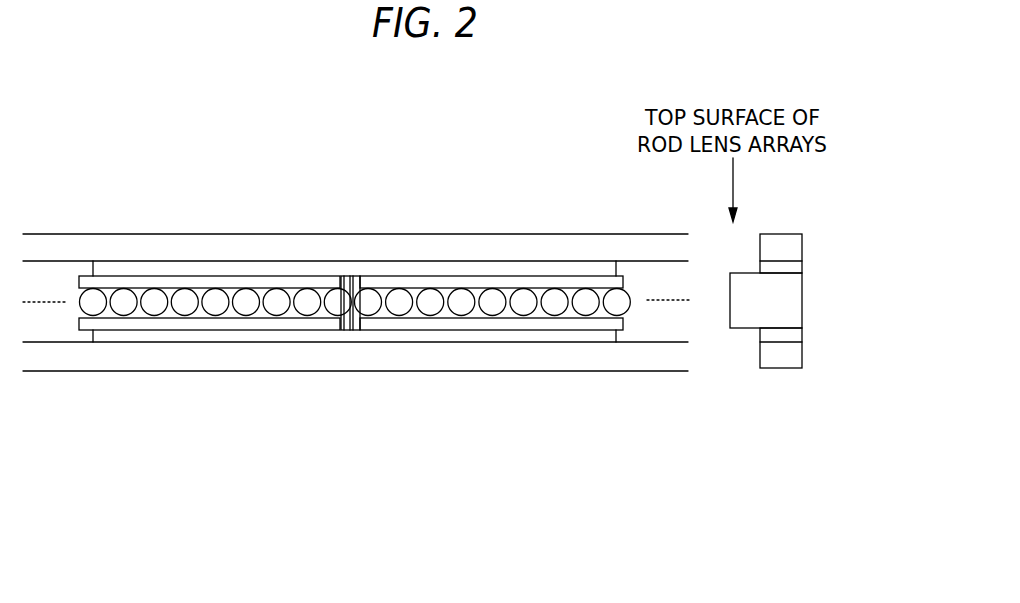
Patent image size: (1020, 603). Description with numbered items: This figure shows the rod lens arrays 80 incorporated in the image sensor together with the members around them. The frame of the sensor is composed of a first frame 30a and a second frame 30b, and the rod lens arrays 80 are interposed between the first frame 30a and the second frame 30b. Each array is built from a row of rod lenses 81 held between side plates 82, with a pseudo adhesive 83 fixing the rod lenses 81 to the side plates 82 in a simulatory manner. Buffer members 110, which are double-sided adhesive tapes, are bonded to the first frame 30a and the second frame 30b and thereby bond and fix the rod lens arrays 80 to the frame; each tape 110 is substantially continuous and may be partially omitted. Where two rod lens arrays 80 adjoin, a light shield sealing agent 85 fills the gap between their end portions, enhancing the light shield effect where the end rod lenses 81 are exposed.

The first frame 30a is at (102, 245).
The second frame 30b is at (100, 355).
The rod lens arrays 80 is at (663, 313).
The rod lenses 81 is at (216, 290).
The side plates 82 is at (460, 277).
The adhesive 83 is at (386, 314).
The light shield sealing agent 85 is at (346, 275).
The buffer members 110 is at (548, 266).